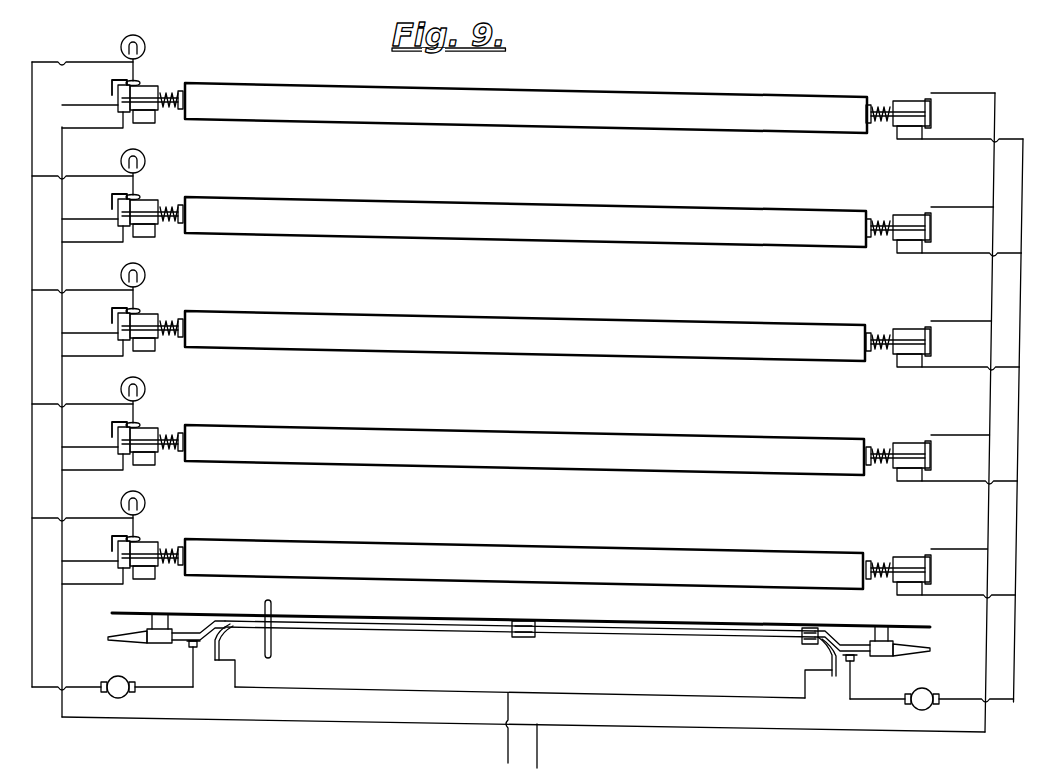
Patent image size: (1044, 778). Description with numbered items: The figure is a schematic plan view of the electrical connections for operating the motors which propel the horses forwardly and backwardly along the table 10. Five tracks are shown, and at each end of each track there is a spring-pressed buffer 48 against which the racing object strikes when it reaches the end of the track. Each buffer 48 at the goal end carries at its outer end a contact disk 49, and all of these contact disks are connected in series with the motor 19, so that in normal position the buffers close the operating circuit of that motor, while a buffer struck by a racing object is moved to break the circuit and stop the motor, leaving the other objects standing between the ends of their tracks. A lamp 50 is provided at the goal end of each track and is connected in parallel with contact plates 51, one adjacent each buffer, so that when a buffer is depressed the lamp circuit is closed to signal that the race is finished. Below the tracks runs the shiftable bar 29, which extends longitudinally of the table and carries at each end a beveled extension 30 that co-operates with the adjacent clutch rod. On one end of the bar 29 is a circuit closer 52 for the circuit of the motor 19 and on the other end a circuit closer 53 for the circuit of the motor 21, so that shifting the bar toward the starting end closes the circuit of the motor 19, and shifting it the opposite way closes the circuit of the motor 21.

The table 10 is at (634, 102).
The spring-pressed buffer 48 is at (870, 326).
The contact disk 49 is at (122, 444).
The lamp 50 is at (148, 43).
The contact plate 51 is at (110, 86).
The shiftable bar 29 is at (415, 626).
The beveled extension 30 is at (110, 636).
The circuit closer 52 is at (218, 664).
The circuit closer 53 is at (842, 676).
The motor 19 is at (122, 678).
The motor 21 is at (928, 690).